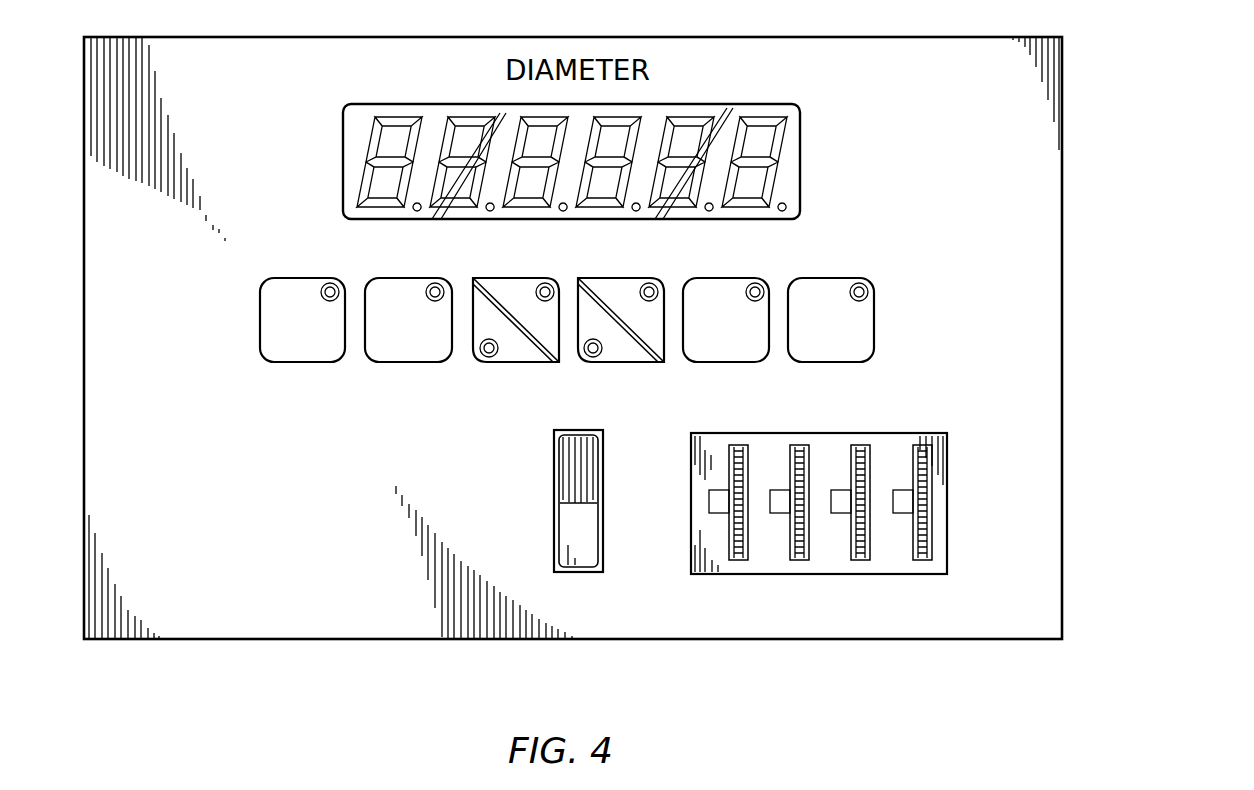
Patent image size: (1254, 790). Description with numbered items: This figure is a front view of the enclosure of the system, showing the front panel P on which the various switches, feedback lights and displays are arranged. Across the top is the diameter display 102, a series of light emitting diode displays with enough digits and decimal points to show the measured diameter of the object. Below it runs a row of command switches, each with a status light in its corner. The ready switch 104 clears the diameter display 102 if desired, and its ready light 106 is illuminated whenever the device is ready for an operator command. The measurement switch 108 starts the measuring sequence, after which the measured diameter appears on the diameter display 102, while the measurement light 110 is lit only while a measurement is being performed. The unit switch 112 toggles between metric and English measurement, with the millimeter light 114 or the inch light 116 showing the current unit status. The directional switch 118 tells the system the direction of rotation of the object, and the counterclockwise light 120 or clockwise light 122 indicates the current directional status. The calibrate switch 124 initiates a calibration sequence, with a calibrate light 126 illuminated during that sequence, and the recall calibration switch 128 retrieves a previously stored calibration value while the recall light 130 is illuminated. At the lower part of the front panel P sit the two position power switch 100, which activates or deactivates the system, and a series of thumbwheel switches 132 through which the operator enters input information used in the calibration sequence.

The power switch 100 is at (567, 521).
The diameter display 102 is at (687, 105).
The ready switch 104 is at (308, 362).
The ready light 106 is at (333, 283).
The measurement switch 108 is at (416, 362).
The measurement light 110 is at (436, 283).
The unit switch 112 is at (529, 362).
The millimeter light 114 is at (485, 357).
The inch light 116 is at (546, 283).
The directional switch 118 is at (622, 362).
The counterclockwise light 120 is at (596, 357).
The clockwise light 122 is at (650, 283).
The calibrate switch 124 is at (717, 362).
The CALIBRATE indicator lamp 126 is at (756, 283).
The recall calibration switch 128 is at (826, 362).
The recall light 130 is at (860, 283).
The thumbwheel switches 132 is at (947, 518).
The front panel P is at (1117, 330).